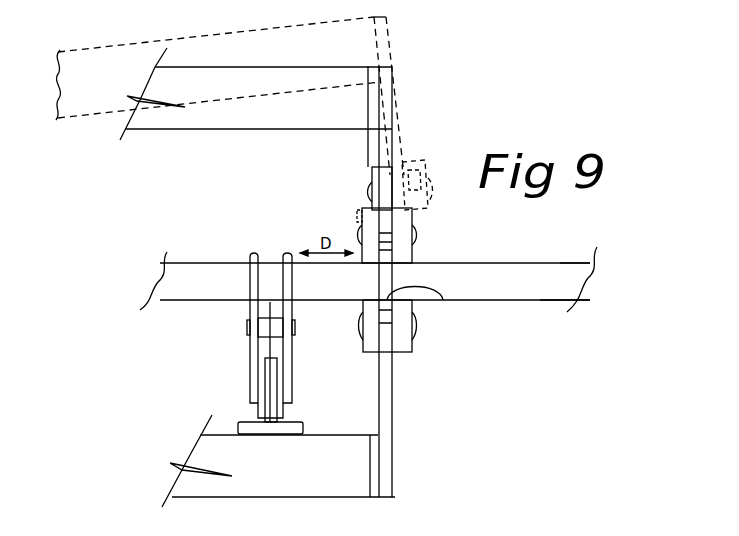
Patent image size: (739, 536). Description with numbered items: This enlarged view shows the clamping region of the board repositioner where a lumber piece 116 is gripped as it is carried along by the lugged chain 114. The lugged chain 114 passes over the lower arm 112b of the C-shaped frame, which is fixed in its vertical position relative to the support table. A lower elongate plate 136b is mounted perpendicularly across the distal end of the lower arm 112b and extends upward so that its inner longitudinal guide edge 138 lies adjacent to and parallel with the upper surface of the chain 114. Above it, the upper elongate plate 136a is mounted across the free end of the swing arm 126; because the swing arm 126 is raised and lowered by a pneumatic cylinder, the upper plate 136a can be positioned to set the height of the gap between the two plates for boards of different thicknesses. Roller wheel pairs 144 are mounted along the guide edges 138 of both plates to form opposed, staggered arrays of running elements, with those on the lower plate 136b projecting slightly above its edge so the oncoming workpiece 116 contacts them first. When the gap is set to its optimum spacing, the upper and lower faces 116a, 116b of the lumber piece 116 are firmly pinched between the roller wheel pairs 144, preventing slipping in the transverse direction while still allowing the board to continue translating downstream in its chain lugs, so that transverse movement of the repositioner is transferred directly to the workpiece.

The swing arm 126 is at (217, 115).
The upper elongate plate 136a is at (395, 78).
The lower elongate plate 136b is at (389, 388).
The roller wheel pairs 144 is at (402, 239).
The lumber piece 116 is at (503, 275).
The upper face 116a is at (568, 263).
The lower face 116b is at (548, 302).
The inner longitudinal guide edge 138 is at (443, 300).
The lugged chain 114 is at (250, 347).
The lower arm 112b is at (210, 450).